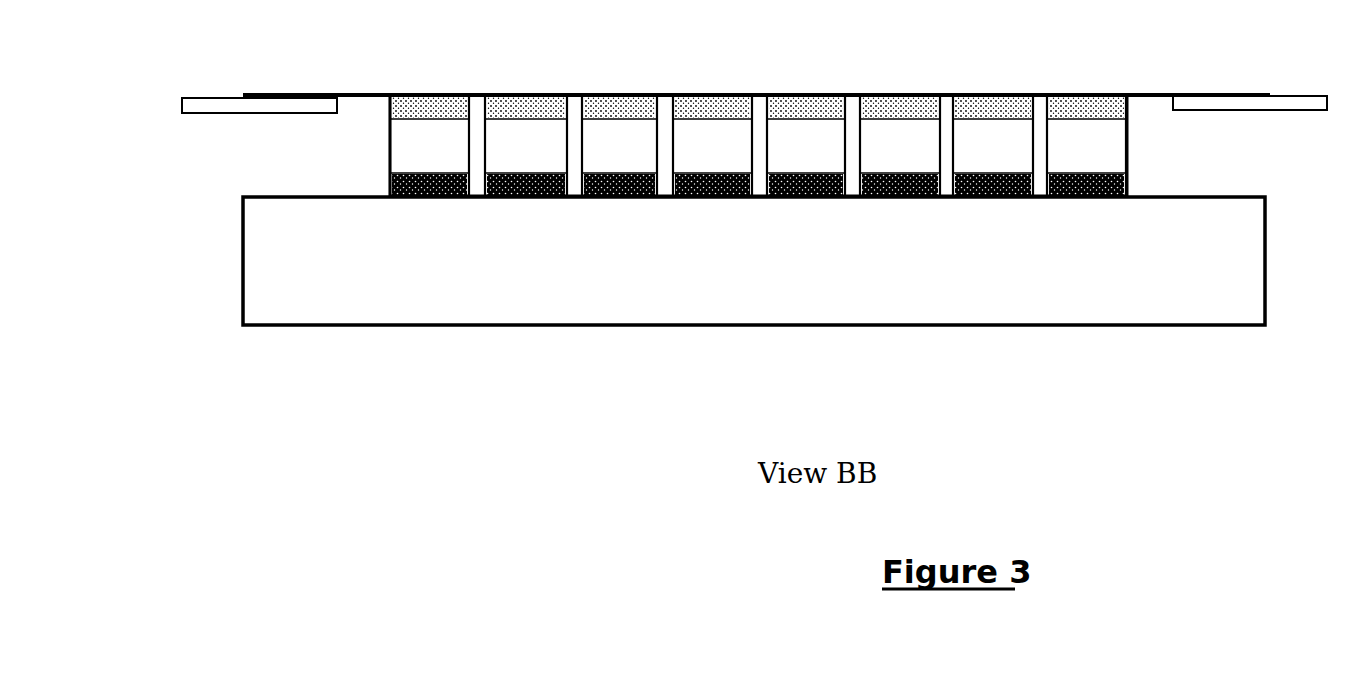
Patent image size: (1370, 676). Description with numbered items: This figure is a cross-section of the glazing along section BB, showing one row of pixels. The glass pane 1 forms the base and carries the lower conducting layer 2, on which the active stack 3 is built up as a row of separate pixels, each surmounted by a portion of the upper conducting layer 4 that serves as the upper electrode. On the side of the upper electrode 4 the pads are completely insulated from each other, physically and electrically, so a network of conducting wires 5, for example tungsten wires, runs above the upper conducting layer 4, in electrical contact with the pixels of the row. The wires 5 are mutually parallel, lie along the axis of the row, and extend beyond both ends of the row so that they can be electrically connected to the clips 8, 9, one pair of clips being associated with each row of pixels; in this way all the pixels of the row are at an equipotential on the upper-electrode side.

The glass pane 1 is at (1255, 259).
The lower conducting layer 2 is at (1079, 177).
The active stack 3 is at (1110, 143).
The upper conducting layer 4 is at (1085, 94).
The conducting wires 5 is at (348, 95).
The clip 8 is at (200, 105).
The clip 9 is at (1296, 100).